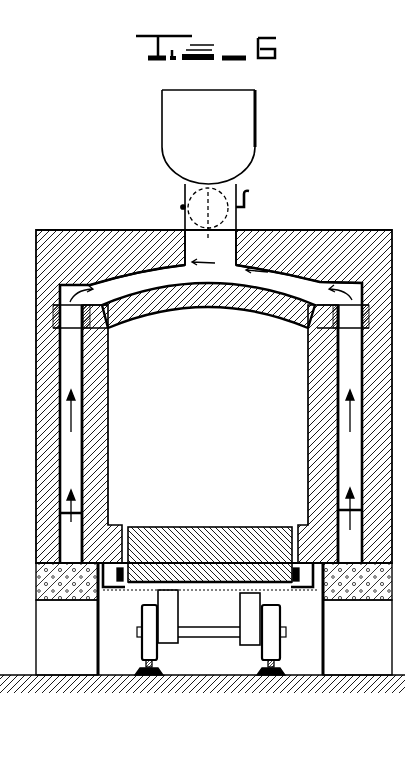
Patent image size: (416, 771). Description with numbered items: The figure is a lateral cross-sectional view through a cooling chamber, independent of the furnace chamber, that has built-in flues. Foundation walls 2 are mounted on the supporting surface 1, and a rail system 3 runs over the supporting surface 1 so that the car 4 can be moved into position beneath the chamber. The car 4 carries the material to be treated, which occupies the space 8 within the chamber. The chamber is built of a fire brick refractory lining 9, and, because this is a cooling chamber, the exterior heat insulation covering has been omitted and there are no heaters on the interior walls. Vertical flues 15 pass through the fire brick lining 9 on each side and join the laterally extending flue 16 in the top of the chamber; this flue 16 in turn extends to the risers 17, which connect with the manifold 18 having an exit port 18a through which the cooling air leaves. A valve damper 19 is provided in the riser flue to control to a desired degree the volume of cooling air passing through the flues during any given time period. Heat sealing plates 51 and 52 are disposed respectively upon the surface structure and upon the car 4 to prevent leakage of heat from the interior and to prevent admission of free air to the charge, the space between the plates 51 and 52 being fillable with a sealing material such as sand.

The supporting surface 1 is at (76, 676).
The foundation walls 2 is at (214, 619).
The rail system 3 is at (150, 678).
The car 4 is at (210, 592).
The heating chamber space 8 is at (208, 427).
The refractory lining 9 is at (40, 398).
The vertical flues 15 is at (70, 456).
The laterally extending flue 16 is at (132, 291).
The risers 17 is at (183, 218).
The manifold 18 is at (233, 133).
The exit port 18a is at (236, 88).
The valve damper 19 is at (218, 195).
The heat sealing plate 51 is at (103, 592).
The heat sealing plate 52 is at (150, 542).